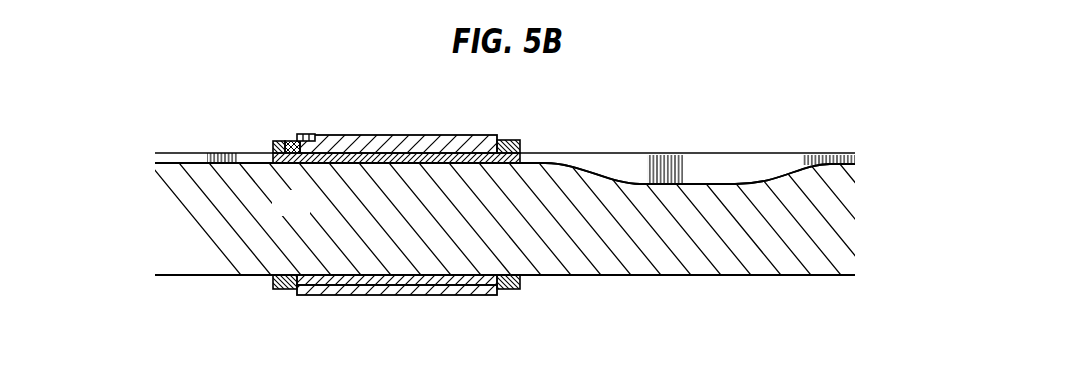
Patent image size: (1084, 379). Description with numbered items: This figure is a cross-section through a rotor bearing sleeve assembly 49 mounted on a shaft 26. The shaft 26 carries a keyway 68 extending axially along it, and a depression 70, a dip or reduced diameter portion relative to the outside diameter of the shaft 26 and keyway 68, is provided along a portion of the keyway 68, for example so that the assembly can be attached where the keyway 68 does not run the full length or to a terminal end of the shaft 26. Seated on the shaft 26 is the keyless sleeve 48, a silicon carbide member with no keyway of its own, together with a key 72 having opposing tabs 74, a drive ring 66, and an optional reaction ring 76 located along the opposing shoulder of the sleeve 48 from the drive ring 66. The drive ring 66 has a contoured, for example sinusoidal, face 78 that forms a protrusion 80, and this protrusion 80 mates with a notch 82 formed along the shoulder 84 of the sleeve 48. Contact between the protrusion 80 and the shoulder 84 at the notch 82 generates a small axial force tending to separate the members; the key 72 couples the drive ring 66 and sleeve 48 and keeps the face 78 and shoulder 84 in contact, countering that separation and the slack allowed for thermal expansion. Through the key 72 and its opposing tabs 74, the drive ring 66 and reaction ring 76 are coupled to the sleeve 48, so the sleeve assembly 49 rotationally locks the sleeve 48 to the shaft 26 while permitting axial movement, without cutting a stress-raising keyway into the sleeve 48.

The shaft 26 is at (758, 276).
The rotor bearing sleeve 48 is at (397, 296).
The sleeve assembly 49 is at (397, 146).
The drive ring 66 is at (282, 292).
The keyway 68 is at (182, 158).
The depression 70 is at (748, 163).
The key 72 is at (422, 140).
The opposing tabs 74 is at (281, 141).
The reaction ring 76 is at (512, 290).
The face 78 is at (316, 292).
The protrusion 80 is at (305, 140).
The notch 82 is at (293, 163).
The shoulder 84 is at (288, 141).